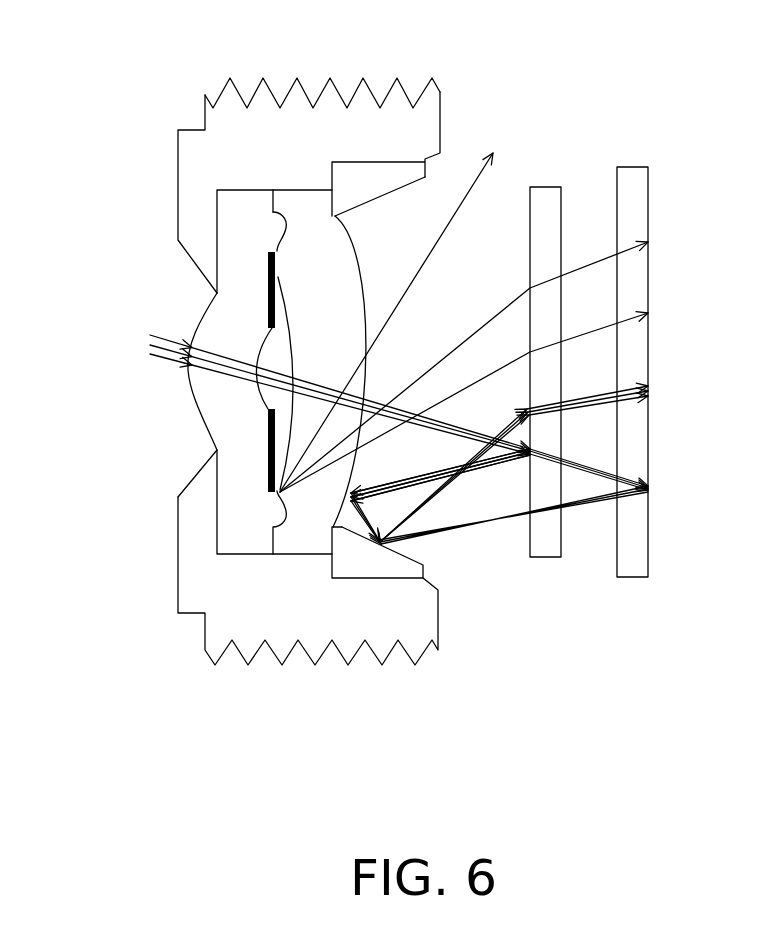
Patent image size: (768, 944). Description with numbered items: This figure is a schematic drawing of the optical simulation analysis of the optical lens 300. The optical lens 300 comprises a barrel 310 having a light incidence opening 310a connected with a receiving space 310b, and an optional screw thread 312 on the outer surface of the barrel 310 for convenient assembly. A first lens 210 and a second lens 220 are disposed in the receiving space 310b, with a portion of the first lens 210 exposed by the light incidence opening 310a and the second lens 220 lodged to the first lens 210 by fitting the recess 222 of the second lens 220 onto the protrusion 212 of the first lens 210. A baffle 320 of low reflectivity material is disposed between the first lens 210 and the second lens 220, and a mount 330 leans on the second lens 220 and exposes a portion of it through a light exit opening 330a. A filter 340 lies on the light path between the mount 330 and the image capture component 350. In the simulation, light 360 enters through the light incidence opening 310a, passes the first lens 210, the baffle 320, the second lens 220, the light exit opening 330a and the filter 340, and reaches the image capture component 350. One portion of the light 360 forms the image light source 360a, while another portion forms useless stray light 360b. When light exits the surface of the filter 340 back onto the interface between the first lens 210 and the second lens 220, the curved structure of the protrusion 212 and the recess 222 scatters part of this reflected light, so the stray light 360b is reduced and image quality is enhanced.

The optical lens 300 is at (747, 813).
The barrel 310 is at (187, 594).
The light incidence opening 310a is at (197, 475).
The receiving space 310b is at (230, 553).
The screw thread 312 is at (272, 92).
The first lens 210 is at (238, 500).
The protrusion 212 is at (282, 216).
The second lens 220 is at (317, 505).
The recess 222 is at (284, 228).
The baffle 320 is at (272, 557).
The mount 330 is at (393, 563).
The light exit opening 330a is at (412, 182).
The filter 340 is at (550, 537).
The image capture component 350 is at (635, 537).
The light 360 is at (172, 357).
The image light source 360a is at (649, 488).
The stray light 360b is at (659, 242).